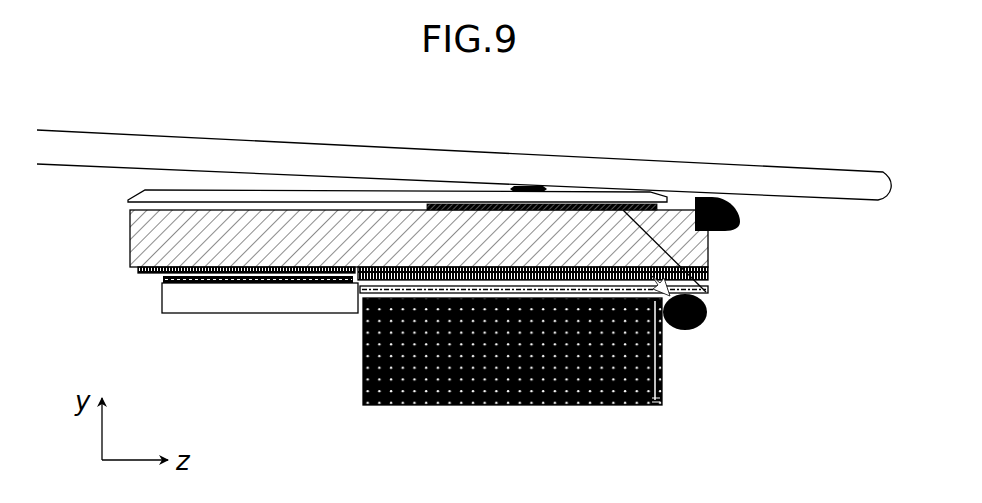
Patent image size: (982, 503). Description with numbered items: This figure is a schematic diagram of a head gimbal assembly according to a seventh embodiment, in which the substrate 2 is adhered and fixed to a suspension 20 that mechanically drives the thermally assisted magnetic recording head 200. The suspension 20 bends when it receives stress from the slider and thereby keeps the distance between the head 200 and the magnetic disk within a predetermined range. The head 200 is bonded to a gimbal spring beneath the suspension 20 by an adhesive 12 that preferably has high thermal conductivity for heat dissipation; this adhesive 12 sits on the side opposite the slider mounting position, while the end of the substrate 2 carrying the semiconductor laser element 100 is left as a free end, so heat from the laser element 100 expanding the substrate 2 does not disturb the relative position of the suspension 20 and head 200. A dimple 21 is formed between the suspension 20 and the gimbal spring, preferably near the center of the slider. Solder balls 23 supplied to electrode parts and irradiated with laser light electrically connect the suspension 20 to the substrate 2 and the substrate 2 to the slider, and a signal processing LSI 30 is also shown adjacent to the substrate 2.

The substrate 2 is at (134, 237).
The adhesive 12 is at (708, 287).
The suspension 20 is at (287, 158).
The dimple 21 is at (530, 188).
The solder ball 23 is at (738, 216).
The signal processing LSI 30 is at (128, 199).
The semiconductor laser element 100 is at (243, 313).
The thermally assisted magnetic recording head 200 is at (447, 407).